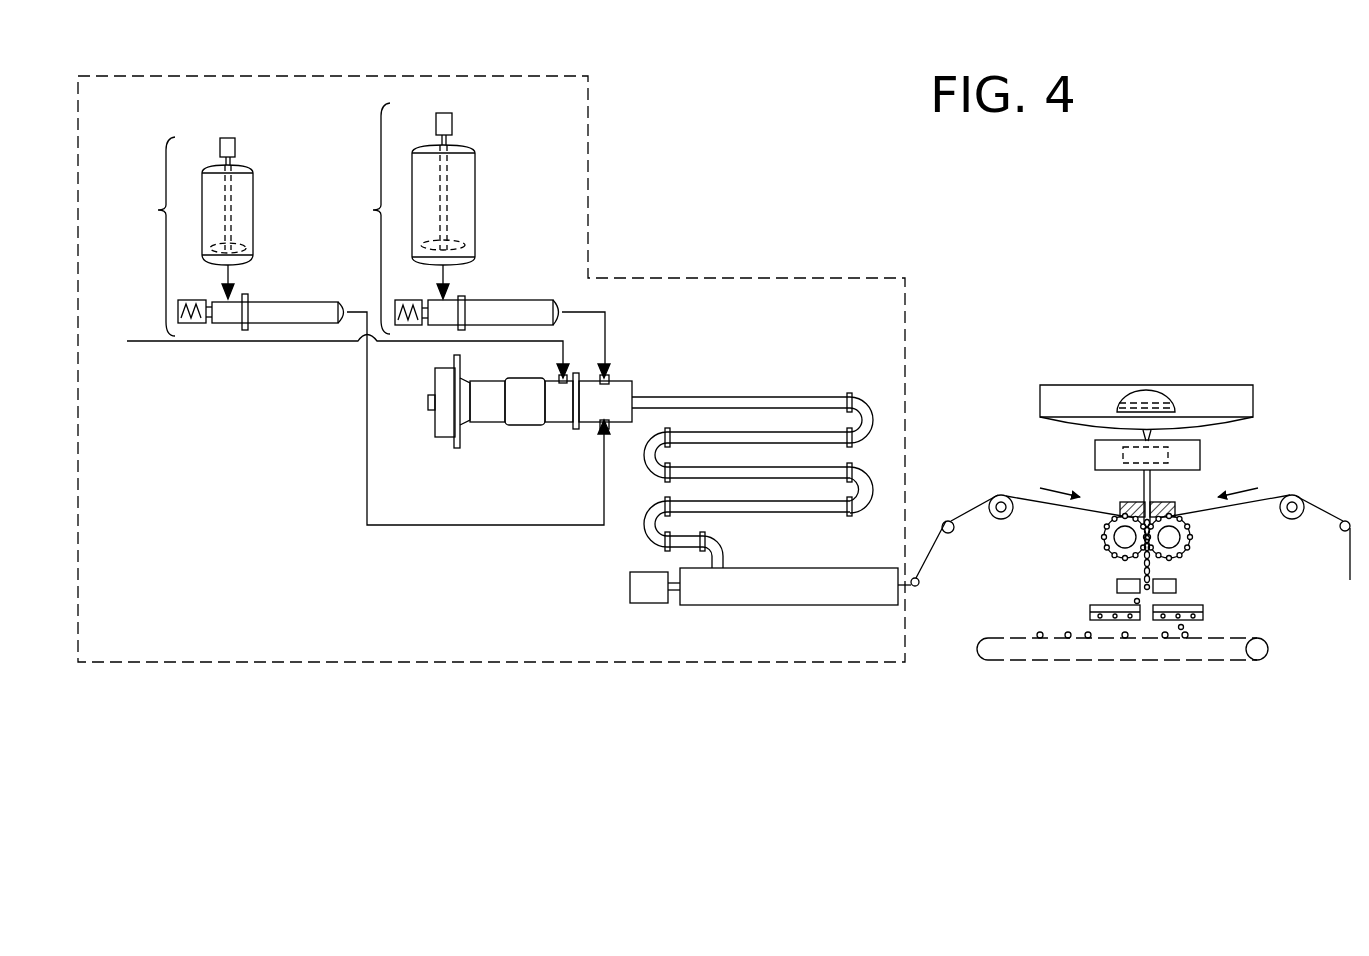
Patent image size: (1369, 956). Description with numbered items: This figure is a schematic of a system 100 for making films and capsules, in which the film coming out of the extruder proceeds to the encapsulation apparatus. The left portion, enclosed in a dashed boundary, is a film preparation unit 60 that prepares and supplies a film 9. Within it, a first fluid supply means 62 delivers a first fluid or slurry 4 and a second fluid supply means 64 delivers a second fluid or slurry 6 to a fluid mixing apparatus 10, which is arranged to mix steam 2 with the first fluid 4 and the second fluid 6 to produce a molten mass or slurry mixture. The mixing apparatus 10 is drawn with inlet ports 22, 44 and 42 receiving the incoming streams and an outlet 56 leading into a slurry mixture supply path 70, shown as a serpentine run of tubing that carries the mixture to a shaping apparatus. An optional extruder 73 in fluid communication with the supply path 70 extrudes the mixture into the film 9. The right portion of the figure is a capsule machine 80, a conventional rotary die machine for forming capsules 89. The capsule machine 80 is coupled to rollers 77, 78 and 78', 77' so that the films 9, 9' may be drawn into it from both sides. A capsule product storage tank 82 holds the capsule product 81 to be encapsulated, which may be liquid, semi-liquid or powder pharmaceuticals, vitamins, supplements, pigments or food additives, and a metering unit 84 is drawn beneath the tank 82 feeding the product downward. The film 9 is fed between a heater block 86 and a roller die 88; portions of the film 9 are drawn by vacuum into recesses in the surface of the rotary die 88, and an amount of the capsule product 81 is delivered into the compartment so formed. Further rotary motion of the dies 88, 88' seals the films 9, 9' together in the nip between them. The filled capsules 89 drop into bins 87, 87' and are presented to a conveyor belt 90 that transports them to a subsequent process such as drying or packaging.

The system 100 is at (710, 210).
The film preparation unit 60 is at (445, 75).
The first fluid supply means 62 is at (233, 236).
The second fluid supply means 64 is at (448, 218).
The first fluid or slurry 4 is at (232, 272).
The second fluid or slurry 6 is at (446, 270).
The steam 2 is at (256, 344).
The fluid mixing apparatus 10 is at (512, 442).
The inlet port 22 is at (559, 378).
The inlet port 44 is at (611, 378).
The inlet port 42 is at (598, 430).
The outlet 56 is at (640, 393).
The slurry mixture supply path 70 is at (760, 396).
The extruder 73 is at (753, 606).
The capsule machine 80 is at (1024, 394).
The roller 77 is at (940, 553).
The roller 78 is at (985, 529).
The film 9 is at (1058, 489).
The film 9' is at (1235, 487).
The roller 78' is at (1307, 531).
The roller 77' is at (1333, 552).
The capsule product storage tank 82 is at (1222, 386).
The capsule product 81 is at (1145, 396).
The metering unit 84 is at (1201, 452).
The heater block 86 is at (1166, 504).
The roller die 88 is at (1098, 537).
The rotary die 88' is at (1201, 537).
The capsules 89 is at (1142, 565).
The bin 87 is at (1093, 599).
The bin 87' is at (1203, 599).
The conveyor belt 90 is at (1062, 661).